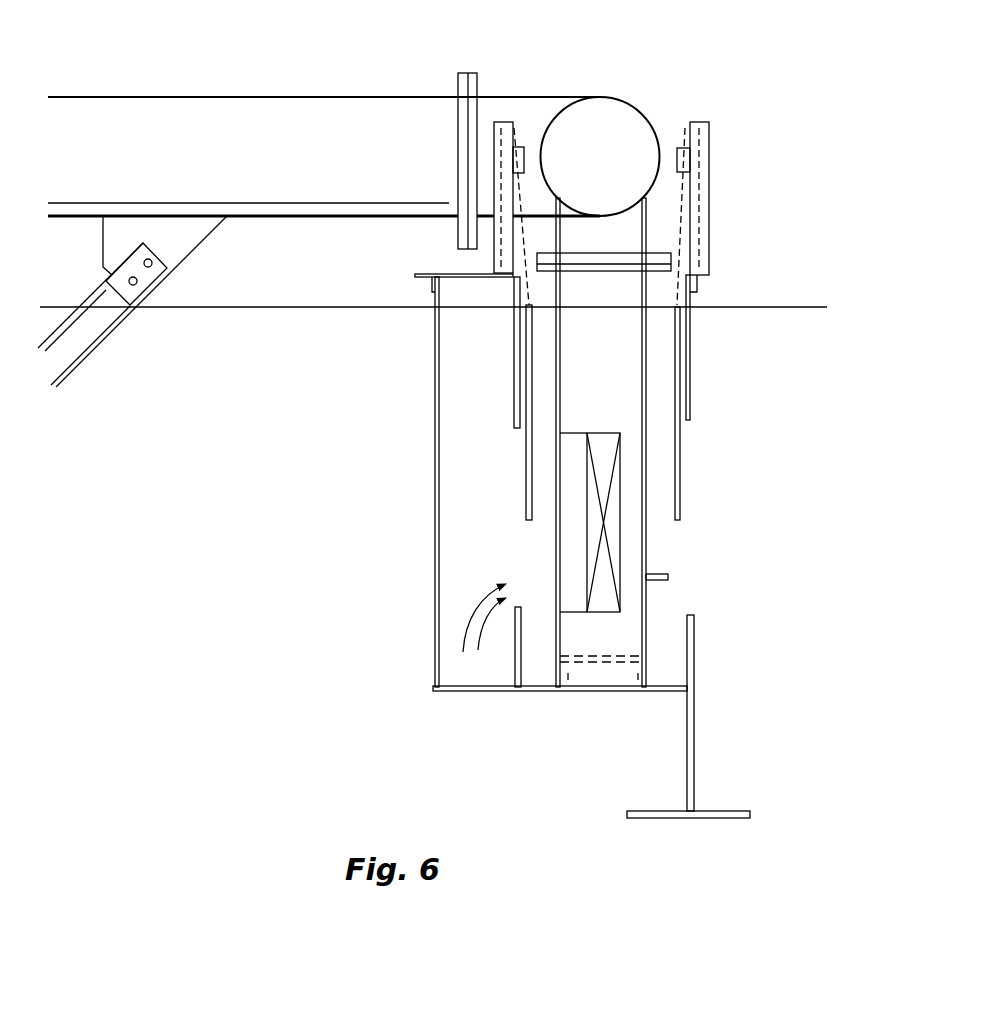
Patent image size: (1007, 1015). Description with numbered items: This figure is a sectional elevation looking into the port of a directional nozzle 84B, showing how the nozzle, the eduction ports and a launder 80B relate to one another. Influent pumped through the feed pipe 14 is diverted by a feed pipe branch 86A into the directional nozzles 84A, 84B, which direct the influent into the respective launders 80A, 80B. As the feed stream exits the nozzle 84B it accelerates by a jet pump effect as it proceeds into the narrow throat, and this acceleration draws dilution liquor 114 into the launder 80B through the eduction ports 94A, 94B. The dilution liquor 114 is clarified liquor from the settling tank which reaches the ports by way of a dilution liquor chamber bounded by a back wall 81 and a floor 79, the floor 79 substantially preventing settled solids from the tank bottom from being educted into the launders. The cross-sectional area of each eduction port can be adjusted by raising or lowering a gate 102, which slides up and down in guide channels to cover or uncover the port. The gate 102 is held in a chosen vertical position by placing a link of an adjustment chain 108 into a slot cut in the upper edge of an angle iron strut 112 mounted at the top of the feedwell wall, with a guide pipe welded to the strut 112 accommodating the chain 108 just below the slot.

The feed pipe 14 is at (170, 97).
The floor 79 is at (497, 692).
The launder 80A is at (667, 660).
The launder 80B is at (471, 402).
The back wall 81 is at (432, 350).
The directional nozzle 84A is at (600, 612).
The directional nozzle 84B is at (613, 433).
The feed pipe branch 86A is at (655, 186).
The eduction port 94A is at (668, 544).
The eduction port 94B is at (525, 567).
The gate 102 is at (526, 482).
The adjustment chain 108 is at (516, 133).
The angle iron strut 112 is at (493, 258).
The dilution liquor 114 is at (525, 147).